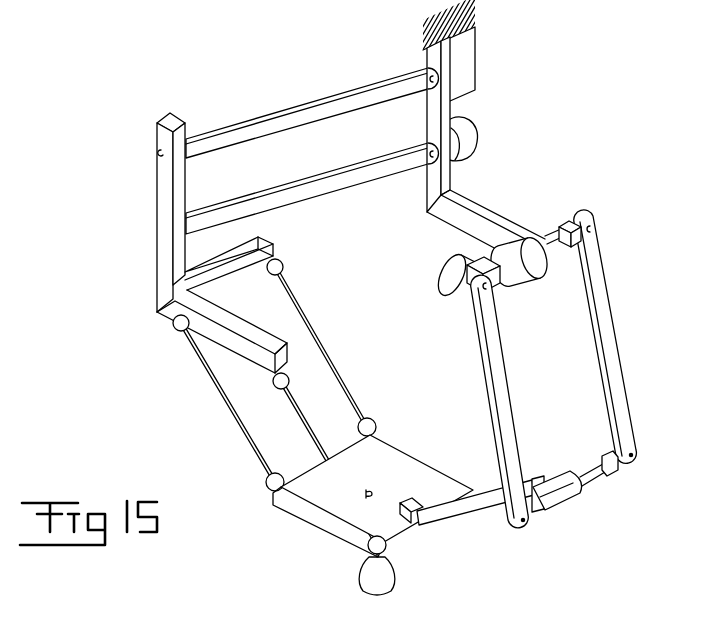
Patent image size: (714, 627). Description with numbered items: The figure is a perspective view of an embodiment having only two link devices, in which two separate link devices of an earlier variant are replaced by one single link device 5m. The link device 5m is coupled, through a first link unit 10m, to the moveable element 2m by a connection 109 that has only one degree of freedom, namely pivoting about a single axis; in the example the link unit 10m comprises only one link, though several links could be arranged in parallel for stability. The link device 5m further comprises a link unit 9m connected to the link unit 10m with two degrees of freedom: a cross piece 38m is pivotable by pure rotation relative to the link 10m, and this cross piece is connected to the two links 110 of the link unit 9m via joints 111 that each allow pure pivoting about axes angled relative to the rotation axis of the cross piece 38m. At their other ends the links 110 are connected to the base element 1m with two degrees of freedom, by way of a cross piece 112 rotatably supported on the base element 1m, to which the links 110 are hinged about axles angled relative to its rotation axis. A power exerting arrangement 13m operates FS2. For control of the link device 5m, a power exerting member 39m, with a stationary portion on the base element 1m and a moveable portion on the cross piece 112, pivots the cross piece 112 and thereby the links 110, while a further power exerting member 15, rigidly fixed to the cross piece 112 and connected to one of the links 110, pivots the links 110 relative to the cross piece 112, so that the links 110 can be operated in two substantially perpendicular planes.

The second link device FS2 is at (341, 70).
The power exerting arrangement 13m is at (464, 140).
The base element 1m is at (477, 222).
The cross piece 112 is at (548, 233).
The power exerting member 15 is at (443, 265).
The link unit 9m is at (418, 343).
The link device 5m is at (474, 368).
The power exerting member 39m is at (527, 262).
The links 110 is at (610, 350).
The cross piece 38m is at (590, 466).
The joints 111 is at (623, 470).
The connection 109 is at (407, 487).
The moveable element 2m is at (313, 505).
The first link unit 10m is at (470, 510).